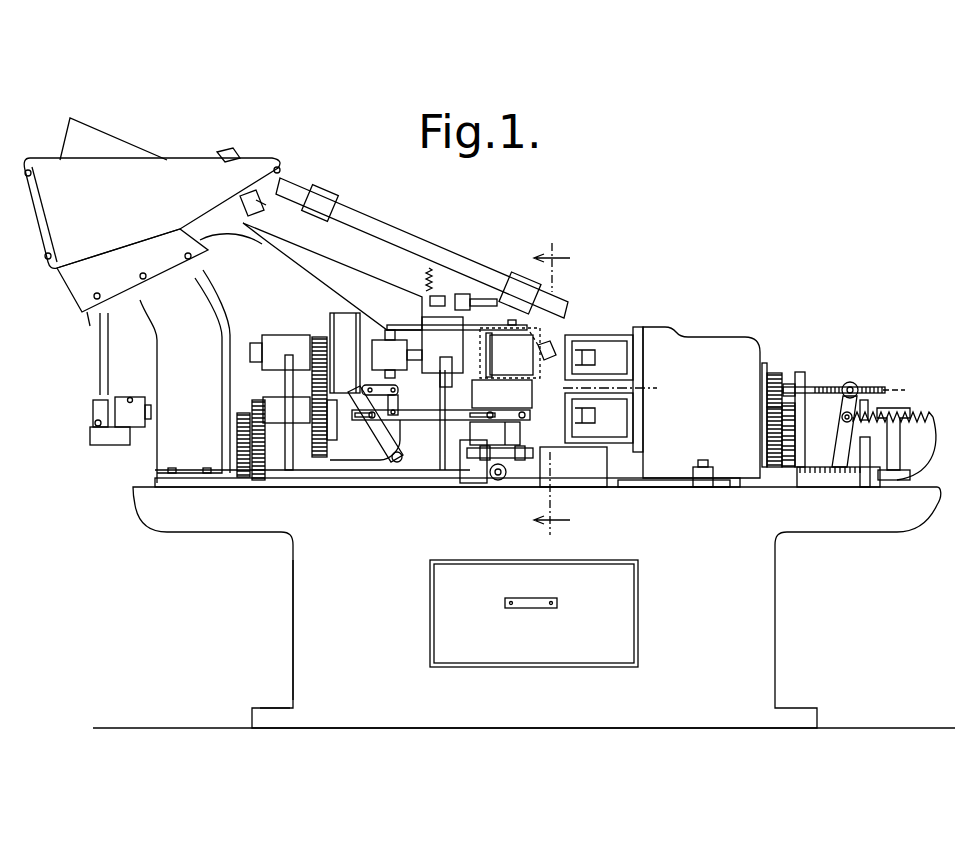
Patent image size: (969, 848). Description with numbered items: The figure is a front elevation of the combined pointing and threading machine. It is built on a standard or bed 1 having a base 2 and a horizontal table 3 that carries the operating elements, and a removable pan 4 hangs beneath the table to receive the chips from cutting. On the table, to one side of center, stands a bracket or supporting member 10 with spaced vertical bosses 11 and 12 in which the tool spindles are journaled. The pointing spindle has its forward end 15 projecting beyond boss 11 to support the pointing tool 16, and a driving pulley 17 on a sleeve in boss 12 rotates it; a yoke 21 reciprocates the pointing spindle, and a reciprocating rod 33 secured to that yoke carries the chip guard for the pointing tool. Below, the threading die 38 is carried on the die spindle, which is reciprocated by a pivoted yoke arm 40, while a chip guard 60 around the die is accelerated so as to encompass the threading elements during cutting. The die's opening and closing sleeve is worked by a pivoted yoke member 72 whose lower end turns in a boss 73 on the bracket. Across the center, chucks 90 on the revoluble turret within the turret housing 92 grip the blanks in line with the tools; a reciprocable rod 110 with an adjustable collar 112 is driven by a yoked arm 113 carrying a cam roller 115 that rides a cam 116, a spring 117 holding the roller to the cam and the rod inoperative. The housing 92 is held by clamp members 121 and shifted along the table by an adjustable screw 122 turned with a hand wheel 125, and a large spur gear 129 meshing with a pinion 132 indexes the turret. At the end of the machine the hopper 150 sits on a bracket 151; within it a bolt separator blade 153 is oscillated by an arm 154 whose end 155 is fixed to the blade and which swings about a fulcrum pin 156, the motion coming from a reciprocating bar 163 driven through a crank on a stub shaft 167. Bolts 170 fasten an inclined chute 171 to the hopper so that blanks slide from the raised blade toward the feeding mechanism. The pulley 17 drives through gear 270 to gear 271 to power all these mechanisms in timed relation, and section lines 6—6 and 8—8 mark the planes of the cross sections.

The standard or bed 1 is at (292, 583).
The base 2 is at (268, 710).
The horizontal table 3 is at (213, 513).
The removable pan 4 is at (601, 577).
The section line 6— 6 is at (552, 391).
The section line 8— 8 is at (736, 389).
The bracket or supporting member 10 is at (395, 478).
The vertical boss 11 is at (430, 383).
The vertical boss 12 is at (276, 338).
The forward end of pointing spindle 15 is at (322, 200).
The pointing tool 16 is at (525, 357).
The driving pulley 17 is at (355, 320).
The yoke 21 is at (388, 335).
The reciprocating rod 33 is at (408, 327).
The threading die 38 is at (520, 432).
The pivoted yoke arm 40 is at (385, 440).
The chip guard 60 is at (527, 392).
The pivoted yoke member 72 is at (506, 462).
The boss 73 is at (482, 478).
The chucks 90 is at (613, 348).
The turret housing 92 is at (700, 345).
The reciprocable rod 110 is at (815, 387).
The adjustable collar 112 is at (850, 382).
The yoked arm 113 is at (840, 444).
The cam roller 115 is at (841, 417).
The cam 116 is at (868, 400).
The spring 117 is at (937, 412).
The clamp members 121 is at (700, 470).
The adjustable screw 122 is at (815, 487).
The hand wheel 125 is at (865, 487).
The large spur gear 129 is at (765, 425).
The pinion 132 is at (775, 373).
The hopper 150 is at (177, 180).
The bracket 151 is at (158, 349).
The bolt separator blade 153 is at (108, 142).
The arm 154 is at (235, 255).
The end of arm 155 is at (78, 330).
The fulcrum pin 156 is at (120, 445).
The reciprocating rod or bar 163 is at (99, 372).
The stub shaft 167 is at (148, 408).
The bolts 170 is at (262, 206).
The inclined guideway or chute 171 is at (388, 235).
The gear 270 is at (319, 337).
The gear 271 is at (328, 440).